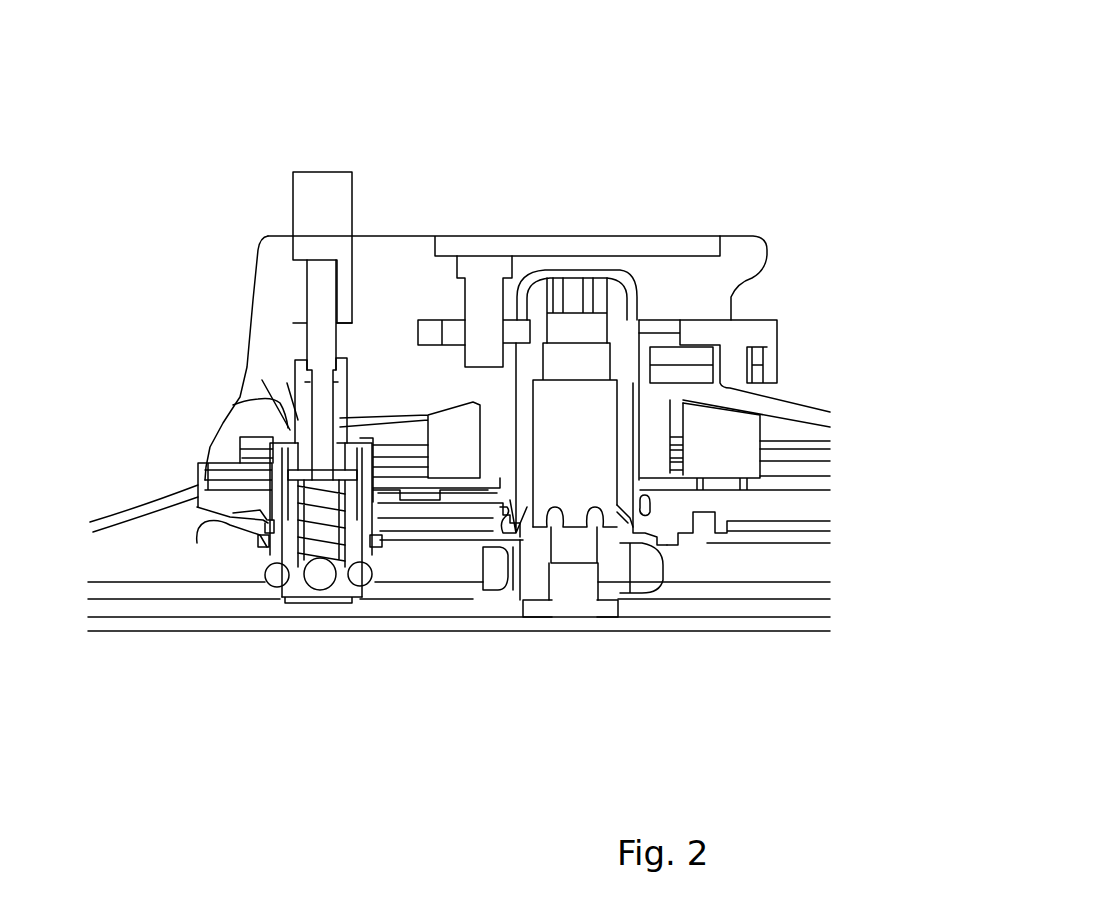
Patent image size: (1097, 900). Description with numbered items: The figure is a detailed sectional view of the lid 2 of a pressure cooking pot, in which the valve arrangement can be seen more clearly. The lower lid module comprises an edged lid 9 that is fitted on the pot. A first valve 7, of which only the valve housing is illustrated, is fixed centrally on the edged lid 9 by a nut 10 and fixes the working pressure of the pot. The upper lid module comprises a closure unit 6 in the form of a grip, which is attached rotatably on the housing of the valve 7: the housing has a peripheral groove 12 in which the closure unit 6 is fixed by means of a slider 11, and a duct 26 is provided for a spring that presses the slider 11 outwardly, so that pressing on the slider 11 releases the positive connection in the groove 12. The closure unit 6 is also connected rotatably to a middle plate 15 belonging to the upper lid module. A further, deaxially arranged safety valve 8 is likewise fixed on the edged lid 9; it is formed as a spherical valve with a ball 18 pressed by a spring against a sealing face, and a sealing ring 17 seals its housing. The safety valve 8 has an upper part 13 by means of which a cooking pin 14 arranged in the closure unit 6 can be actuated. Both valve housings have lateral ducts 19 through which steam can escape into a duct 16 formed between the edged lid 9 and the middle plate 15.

The lid 2 is at (188, 92).
The closure unit 6 is at (385, 258).
The first valve 7 is at (568, 407).
The safety valve 8 is at (236, 403).
The edged lid 9 is at (440, 540).
The nut 10 is at (640, 570).
The slider 11 is at (758, 322).
The peripheral groove 12 is at (522, 342).
The upper part 13 is at (308, 400).
The cooking pin 14 is at (313, 193).
The middle plate 15 is at (240, 497).
The duct 16 is at (197, 543).
The sealing ring 17 is at (360, 583).
The ball 18 is at (317, 580).
The lateral ducts 19 is at (550, 563).
The duct 26 is at (673, 370).